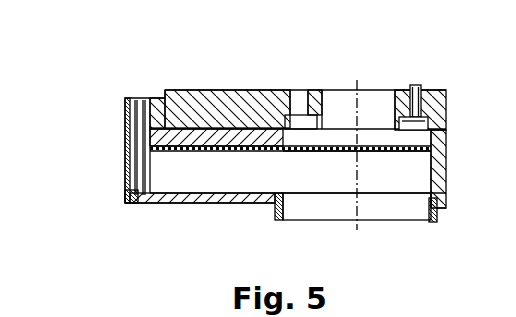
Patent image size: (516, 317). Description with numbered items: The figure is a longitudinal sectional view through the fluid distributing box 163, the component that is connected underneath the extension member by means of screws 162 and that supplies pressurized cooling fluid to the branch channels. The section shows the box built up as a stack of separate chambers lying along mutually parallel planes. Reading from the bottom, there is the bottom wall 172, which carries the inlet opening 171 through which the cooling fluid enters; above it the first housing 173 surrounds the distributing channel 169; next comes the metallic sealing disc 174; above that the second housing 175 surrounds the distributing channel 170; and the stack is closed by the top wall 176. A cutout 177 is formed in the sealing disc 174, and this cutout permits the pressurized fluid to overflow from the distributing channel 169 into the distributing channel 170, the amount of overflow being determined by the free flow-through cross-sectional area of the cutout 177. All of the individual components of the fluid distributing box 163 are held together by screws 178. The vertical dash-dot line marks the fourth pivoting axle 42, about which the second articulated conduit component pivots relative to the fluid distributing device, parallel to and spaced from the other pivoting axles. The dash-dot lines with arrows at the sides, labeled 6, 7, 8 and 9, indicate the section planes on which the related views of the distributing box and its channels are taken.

The section plane 6 is at (85, 70).
The section plane 7 is at (121, 132).
The section plane 8 is at (515, 153).
The section plane 9 is at (121, 167).
The fourth pivoting axle 42 is at (358, 95).
The screws 162 is at (411, 85).
The fluid distributing box 163 is at (234, 88).
The distributing channel 169 is at (373, 180).
The distributing channel 170 is at (330, 129).
The inlet opening 171 is at (283, 203).
The bottom wall 172 is at (228, 203).
The first housing 173 is at (446, 177).
The metallic sealing disc 174 is at (210, 151).
The second housing 175 is at (437, 134).
The top wall 176 is at (193, 90).
The cutout 177 is at (300, 153).
The screws 178 is at (132, 203).